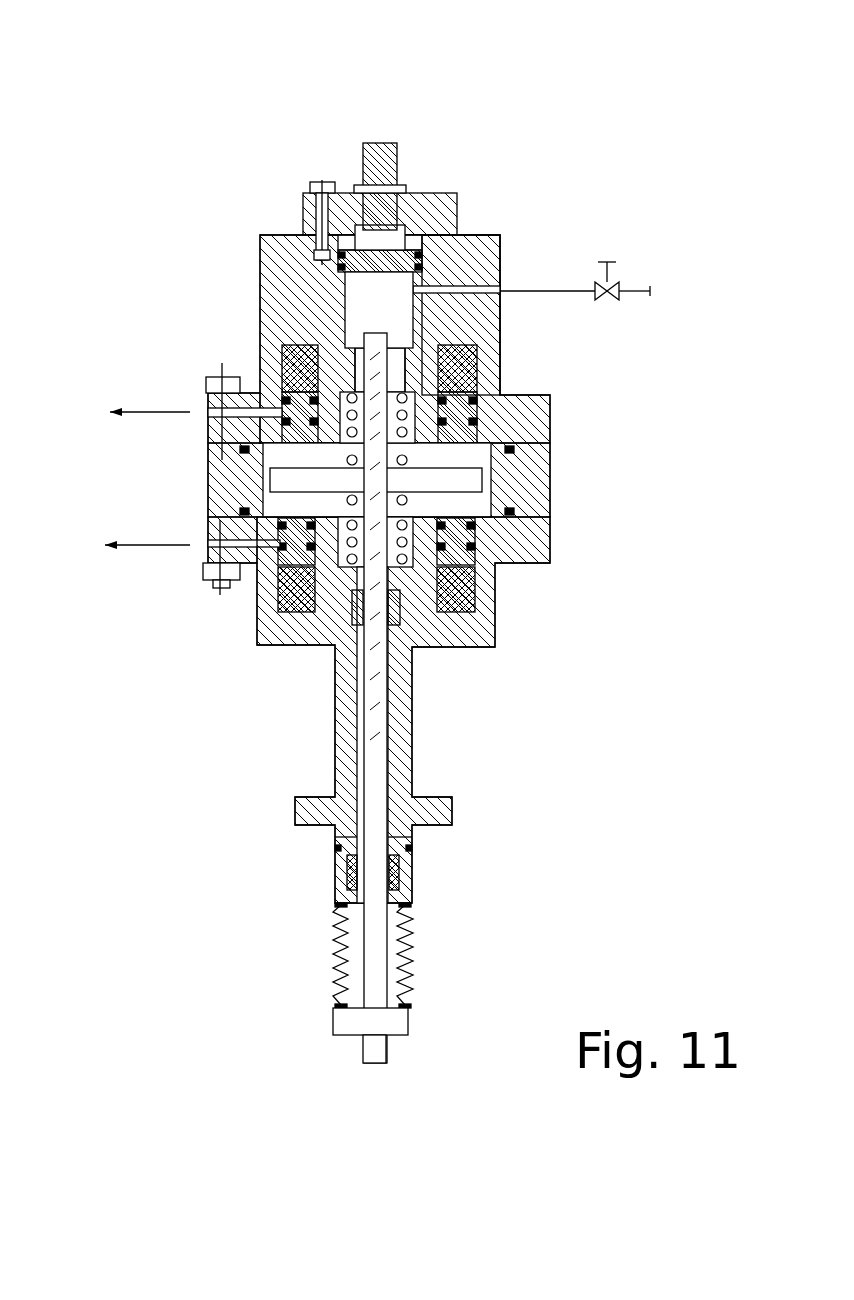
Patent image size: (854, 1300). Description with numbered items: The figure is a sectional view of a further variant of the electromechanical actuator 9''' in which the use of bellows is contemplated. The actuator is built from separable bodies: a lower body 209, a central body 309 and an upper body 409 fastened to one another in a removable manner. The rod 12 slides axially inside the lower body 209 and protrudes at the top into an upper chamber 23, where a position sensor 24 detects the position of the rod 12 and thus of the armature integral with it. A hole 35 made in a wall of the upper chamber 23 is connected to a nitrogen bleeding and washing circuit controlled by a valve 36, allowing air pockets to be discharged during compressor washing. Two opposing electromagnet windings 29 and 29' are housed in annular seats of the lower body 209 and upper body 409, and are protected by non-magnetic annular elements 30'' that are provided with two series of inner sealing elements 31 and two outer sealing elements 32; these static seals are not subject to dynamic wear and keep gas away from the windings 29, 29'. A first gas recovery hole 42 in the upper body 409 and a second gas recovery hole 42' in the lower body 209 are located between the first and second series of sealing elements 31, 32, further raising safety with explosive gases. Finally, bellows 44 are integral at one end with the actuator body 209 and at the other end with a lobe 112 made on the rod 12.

The electromechanical actuator 9''' is at (495, 569).
The rod 12 is at (373, 968).
The upper chamber 23 is at (362, 297).
The position sensor 24 is at (373, 153).
The winding 29 is at (336, 694).
The winding 29' is at (431, 213).
The non-magnetic annular element 30'' is at (398, 453).
The inner sealing element 31 is at (280, 600).
The outer sealing element 32 is at (283, 420).
The hole 35 is at (460, 285).
The valve 36 is at (617, 284).
The first gas recovery hole 42 is at (156, 428).
The second gas recovery hole 42' is at (147, 574).
The bellows 44 is at (335, 960).
The lobe 112 is at (395, 1025).
The lower body 209 is at (448, 637).
The central body 309 is at (535, 487).
The upper body 409 is at (493, 273).